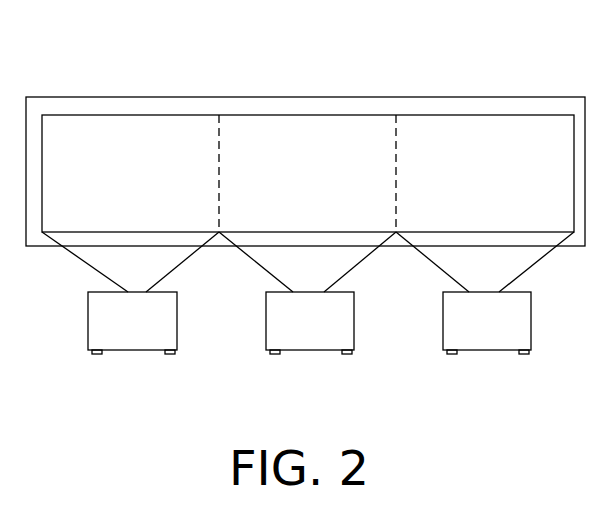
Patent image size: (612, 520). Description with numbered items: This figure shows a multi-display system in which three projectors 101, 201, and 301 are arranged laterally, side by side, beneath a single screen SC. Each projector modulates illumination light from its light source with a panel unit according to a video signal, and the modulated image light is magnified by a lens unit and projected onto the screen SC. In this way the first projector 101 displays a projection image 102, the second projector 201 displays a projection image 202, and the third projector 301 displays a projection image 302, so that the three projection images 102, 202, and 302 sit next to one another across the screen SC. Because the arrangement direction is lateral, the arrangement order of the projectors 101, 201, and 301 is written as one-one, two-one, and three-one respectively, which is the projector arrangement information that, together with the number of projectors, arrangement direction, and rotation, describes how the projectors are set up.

The screen SC is at (456, 97).
The projection image 102 is at (192, 115).
The projection image 202 is at (356, 115).
The projection image 302 is at (524, 115).
The projector 101 is at (107, 352).
The projector 201 is at (284, 352).
The projector 301 is at (463, 352).